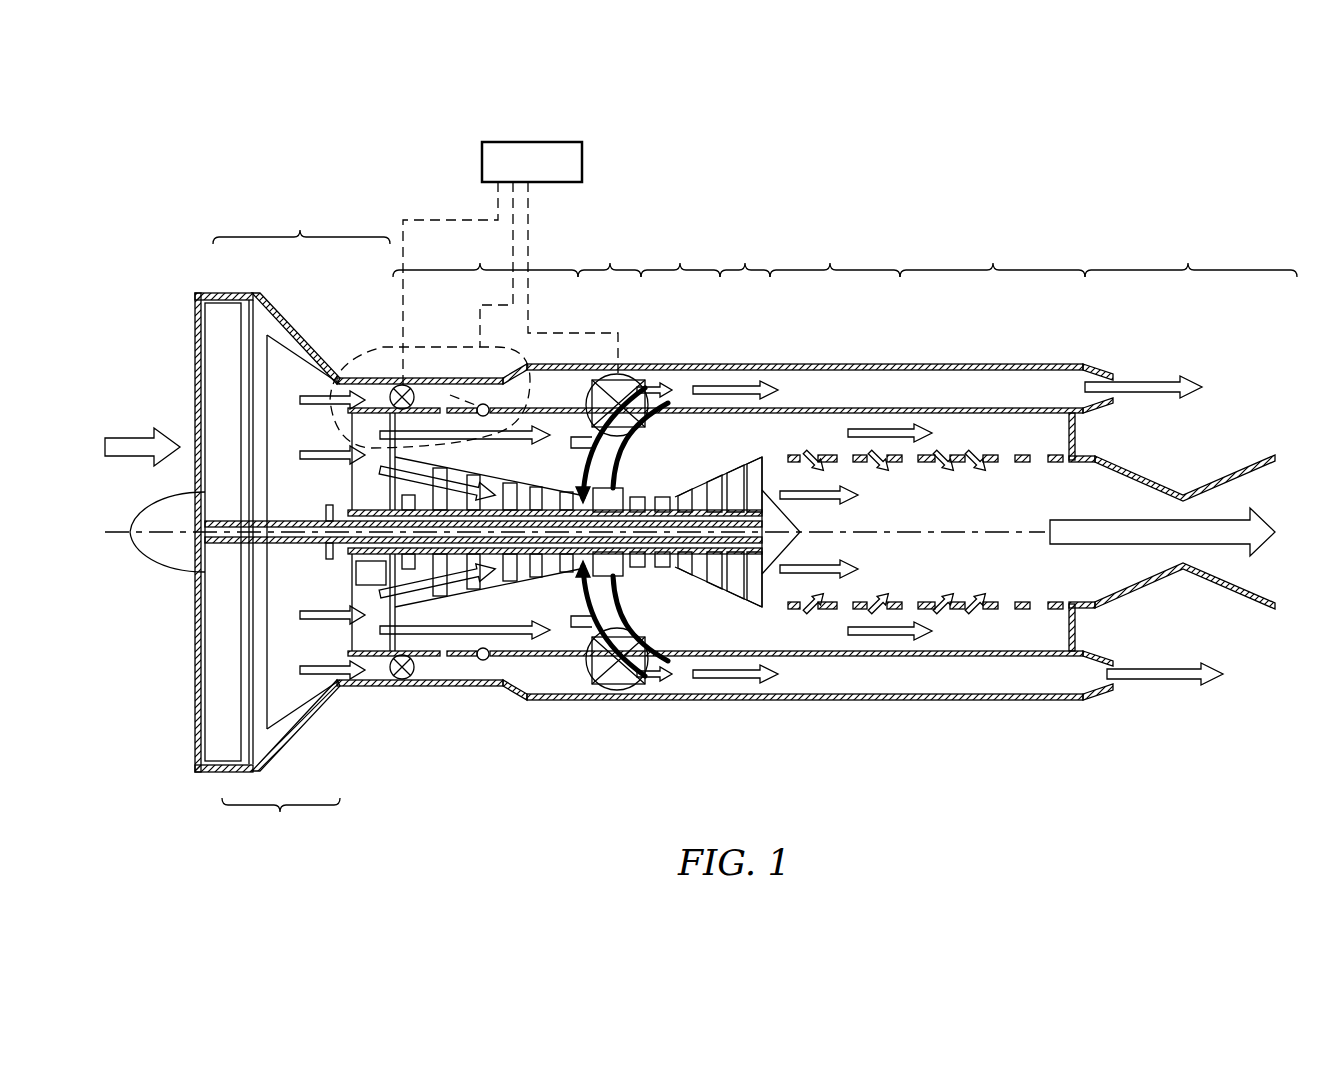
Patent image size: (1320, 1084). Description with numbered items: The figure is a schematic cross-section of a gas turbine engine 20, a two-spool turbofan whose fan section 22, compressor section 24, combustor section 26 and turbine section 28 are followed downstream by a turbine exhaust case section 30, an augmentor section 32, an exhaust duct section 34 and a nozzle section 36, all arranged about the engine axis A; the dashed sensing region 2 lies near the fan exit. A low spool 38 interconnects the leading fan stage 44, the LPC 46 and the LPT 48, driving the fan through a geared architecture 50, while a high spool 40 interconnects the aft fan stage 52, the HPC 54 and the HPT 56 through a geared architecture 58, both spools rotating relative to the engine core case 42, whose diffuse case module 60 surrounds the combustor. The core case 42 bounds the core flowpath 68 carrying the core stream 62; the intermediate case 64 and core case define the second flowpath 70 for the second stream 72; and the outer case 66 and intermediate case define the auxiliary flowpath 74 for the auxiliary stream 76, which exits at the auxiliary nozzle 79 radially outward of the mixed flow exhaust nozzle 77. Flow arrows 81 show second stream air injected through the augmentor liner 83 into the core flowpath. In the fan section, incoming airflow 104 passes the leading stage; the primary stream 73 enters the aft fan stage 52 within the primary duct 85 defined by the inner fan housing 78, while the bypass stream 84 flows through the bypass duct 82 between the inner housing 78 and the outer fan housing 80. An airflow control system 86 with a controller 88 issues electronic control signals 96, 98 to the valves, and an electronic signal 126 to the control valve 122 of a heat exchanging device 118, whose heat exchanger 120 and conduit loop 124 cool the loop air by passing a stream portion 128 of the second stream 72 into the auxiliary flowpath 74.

The core inlet sensing region 2 is at (426, 345).
The gas turbine engine 20 is at (1127, 196).
The fan section 22 is at (301, 223).
The compressor section 24 is at (485, 256).
The combustor section 26 is at (609, 256).
The turbine section 28 is at (680, 256).
The turbine exhaust case section 30 is at (745, 256).
The augmentor section 32 is at (835, 256).
The exhaust duct section 34 is at (992, 256).
The nozzle section 36 is at (1191, 256).
The low spool 38 is at (766, 578).
The high spool 40 is at (567, 574).
The engine core case 42 is at (692, 592).
The leading fan stage 44 is at (281, 824).
The LPC 46 is at (447, 594).
The LPT 48 is at (708, 483).
The geared architecture 50 is at (326, 566).
The aft fan stage 52 is at (350, 590).
The HPC 54 is at (580, 615).
The HPT 56 is at (655, 488).
The geared architecture 58 is at (398, 487).
The diffuse case module 60 is at (625, 577).
The core air stream 62 is at (397, 618).
The intermediate case 64 is at (838, 700).
The outer case 66 is at (934, 710).
The core flowpath 68 is at (522, 493).
The second flowpath 70 is at (656, 470).
The second stream 72 is at (510, 690).
The primary stream 73 is at (300, 452).
The auxiliary flowpath 74 is at (905, 400).
The auxiliary stream 76 is at (736, 364).
The mixed flow exhaust nozzle 77 is at (1215, 480).
The inner fan housing 78 is at (375, 404).
The auxiliary nozzle 79 is at (1097, 701).
The outer fan housing 80 is at (276, 298).
The flow arrows 81 is at (952, 473).
The bypass duct 82 is at (382, 676).
The augmentor liner 83 is at (1030, 465).
The bypass stream 84 is at (318, 677).
The primary duct 85 is at (372, 572).
The airflow control system 86 is at (592, 142).
The controller 88 is at (545, 174).
The electronic control signal 96 is at (433, 217).
The electronic control signal 98 is at (497, 212).
The incoming airflow 104 is at (122, 432).
The heat exchanging device 118 is at (651, 373).
The heat exchanger 120 is at (592, 677).
The control valve 122 is at (628, 686).
The conduit loop 124 is at (630, 619).
The electronic signal 126 is at (532, 233).
The stream portion 128 is at (583, 437).
The engine axis A is at (120, 566).